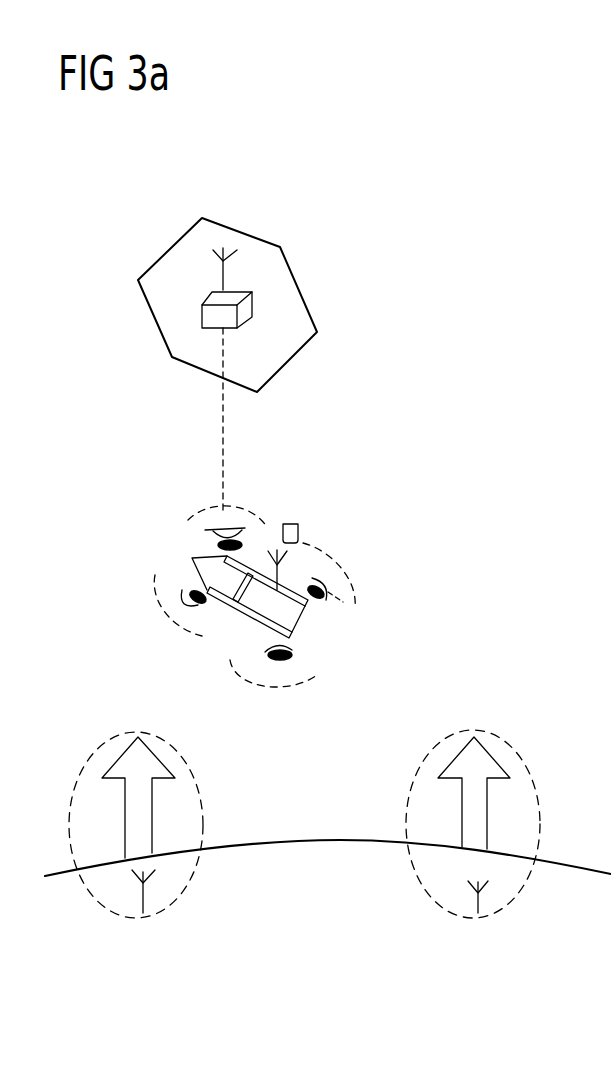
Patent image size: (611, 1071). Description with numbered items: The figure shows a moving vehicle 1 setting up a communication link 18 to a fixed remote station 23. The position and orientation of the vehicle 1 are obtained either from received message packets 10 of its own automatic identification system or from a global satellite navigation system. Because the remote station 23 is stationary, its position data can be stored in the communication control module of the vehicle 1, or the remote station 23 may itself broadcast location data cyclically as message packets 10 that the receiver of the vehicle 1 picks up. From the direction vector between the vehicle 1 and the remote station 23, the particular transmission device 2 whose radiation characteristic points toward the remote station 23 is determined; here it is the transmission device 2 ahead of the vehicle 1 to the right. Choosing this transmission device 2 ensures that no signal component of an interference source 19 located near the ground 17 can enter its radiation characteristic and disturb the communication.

The vehicle 1 is at (217, 648).
The transmission device 2 is at (250, 494).
The message packets 10 is at (296, 524).
The ground surface 17 is at (302, 842).
The communication link 18 is at (221, 416).
The interference source 19 is at (194, 775).
The remote station 23 is at (284, 224).